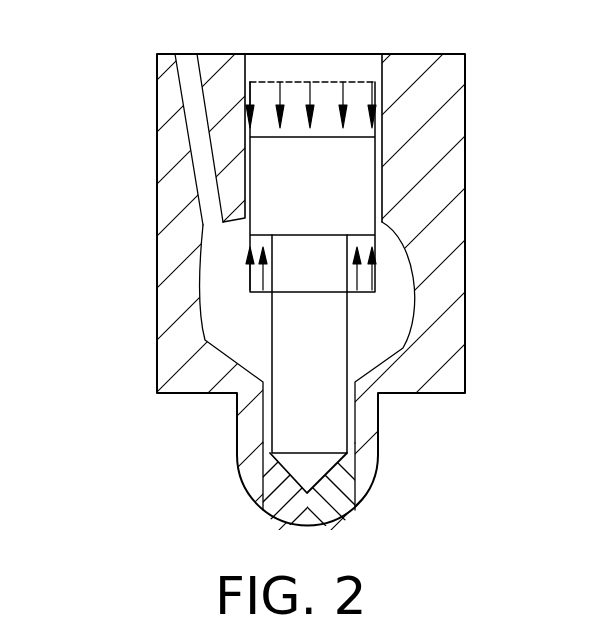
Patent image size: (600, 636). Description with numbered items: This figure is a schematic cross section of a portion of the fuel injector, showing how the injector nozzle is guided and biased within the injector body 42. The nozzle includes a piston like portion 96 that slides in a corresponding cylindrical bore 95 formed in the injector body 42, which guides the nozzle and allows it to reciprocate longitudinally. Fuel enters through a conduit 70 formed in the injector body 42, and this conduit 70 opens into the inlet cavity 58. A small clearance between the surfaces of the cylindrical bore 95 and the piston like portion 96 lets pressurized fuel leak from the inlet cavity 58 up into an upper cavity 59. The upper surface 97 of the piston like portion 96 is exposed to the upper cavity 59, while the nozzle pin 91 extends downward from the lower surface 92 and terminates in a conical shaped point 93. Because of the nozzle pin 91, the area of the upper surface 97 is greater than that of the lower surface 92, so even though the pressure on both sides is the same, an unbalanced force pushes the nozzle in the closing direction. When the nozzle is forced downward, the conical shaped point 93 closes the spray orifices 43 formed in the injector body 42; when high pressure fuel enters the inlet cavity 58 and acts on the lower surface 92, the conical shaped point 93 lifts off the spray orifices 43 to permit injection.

The injector body 42 is at (453, 83).
The upper cavity 59 is at (345, 67).
The conduit 70 is at (197, 159).
The inlet cavity 58 is at (403, 292).
The cylindrical bore 95 is at (383, 143).
The piston like portion 96 is at (363, 178).
The upper surface 97 is at (258, 124).
The lower surface 92 is at (287, 243).
The nozzle pin 91 is at (286, 415).
The conical shaped point 93 is at (320, 466).
The spray orifices 43 is at (257, 467).